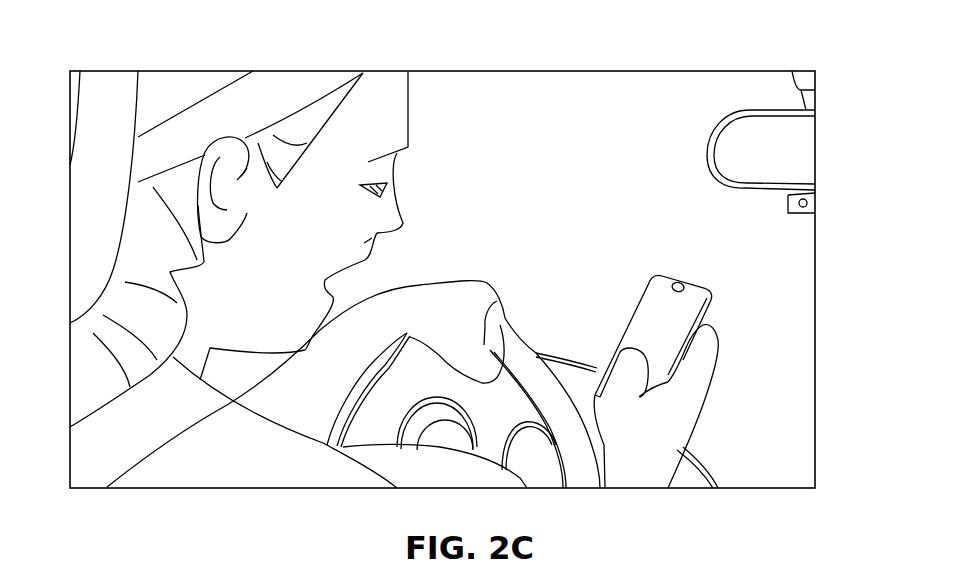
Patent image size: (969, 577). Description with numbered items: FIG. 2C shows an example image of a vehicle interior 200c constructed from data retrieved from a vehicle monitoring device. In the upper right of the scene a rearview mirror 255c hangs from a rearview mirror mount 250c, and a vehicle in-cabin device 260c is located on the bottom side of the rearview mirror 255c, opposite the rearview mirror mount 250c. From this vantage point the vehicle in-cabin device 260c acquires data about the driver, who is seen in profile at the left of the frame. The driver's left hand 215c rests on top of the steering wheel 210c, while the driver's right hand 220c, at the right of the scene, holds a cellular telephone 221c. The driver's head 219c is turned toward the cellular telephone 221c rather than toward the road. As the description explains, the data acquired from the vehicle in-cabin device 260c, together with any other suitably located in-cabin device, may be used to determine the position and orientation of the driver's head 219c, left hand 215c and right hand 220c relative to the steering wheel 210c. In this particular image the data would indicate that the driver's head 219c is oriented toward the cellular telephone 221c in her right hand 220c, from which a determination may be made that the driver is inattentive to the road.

The vehicle interior 200c is at (131, 44).
The steering wheel 210c is at (534, 351).
The driver's left hand 215c is at (483, 280).
The driver's head 219c is at (413, 112).
The driver's right hand 220c is at (692, 370).
The cellular telephone 221c is at (688, 307).
The rearview mirror mount 250c is at (803, 78).
The rearview mirror 255c is at (790, 140).
The vehicle in-cabin device 260c is at (808, 203).